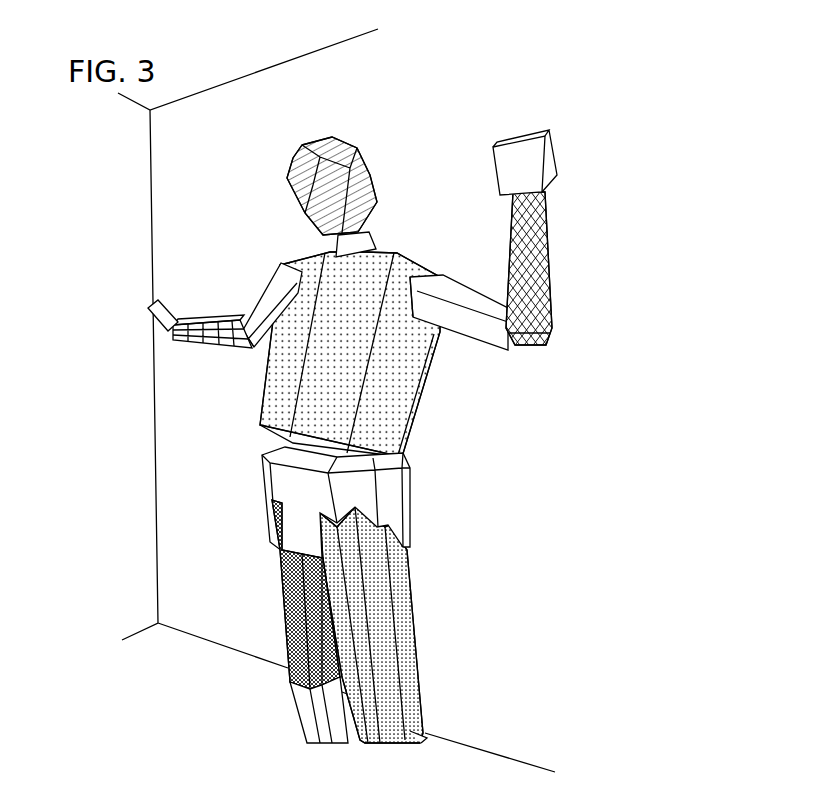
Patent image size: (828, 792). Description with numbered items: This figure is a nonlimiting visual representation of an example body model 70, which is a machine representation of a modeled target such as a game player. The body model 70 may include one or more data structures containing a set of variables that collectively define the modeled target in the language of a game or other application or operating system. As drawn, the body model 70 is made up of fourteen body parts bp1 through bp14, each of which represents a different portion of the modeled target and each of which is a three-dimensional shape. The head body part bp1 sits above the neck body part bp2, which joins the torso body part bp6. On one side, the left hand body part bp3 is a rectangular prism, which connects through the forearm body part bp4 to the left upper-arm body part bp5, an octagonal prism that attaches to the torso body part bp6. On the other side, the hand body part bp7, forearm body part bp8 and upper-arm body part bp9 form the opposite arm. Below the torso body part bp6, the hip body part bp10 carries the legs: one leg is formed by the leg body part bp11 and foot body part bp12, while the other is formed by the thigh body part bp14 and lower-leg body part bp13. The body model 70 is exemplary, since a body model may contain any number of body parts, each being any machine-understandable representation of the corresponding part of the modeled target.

The body model 70 is at (412, 74).
The body part bp1 is at (371, 163).
The body part bp2 is at (379, 232).
The body part bp3 is at (533, 131).
The body part bp4 is at (502, 262).
The body part bp5 is at (471, 348).
The body part bp6 is at (260, 403).
The body part bp7 is at (163, 299).
The body part bp8 is at (204, 316).
The body part bp9 is at (268, 280).
The body part bp10 is at (411, 478).
The body part bp11 is at (416, 606).
The body part bp12 is at (430, 731).
The body part bp13 is at (294, 717).
The body part bp14 is at (274, 620).